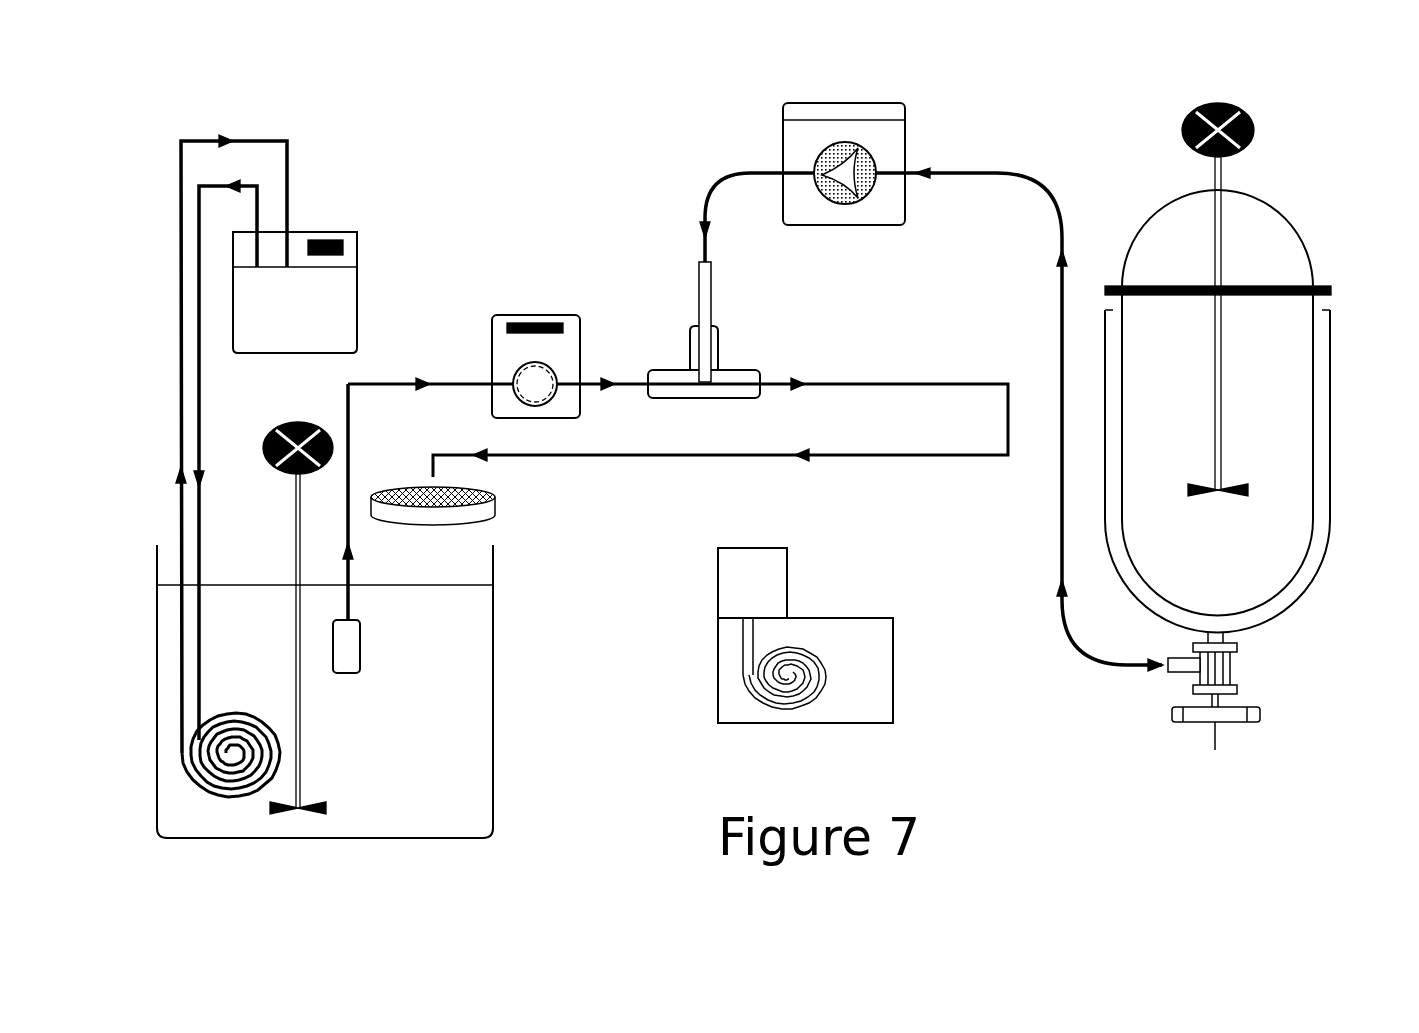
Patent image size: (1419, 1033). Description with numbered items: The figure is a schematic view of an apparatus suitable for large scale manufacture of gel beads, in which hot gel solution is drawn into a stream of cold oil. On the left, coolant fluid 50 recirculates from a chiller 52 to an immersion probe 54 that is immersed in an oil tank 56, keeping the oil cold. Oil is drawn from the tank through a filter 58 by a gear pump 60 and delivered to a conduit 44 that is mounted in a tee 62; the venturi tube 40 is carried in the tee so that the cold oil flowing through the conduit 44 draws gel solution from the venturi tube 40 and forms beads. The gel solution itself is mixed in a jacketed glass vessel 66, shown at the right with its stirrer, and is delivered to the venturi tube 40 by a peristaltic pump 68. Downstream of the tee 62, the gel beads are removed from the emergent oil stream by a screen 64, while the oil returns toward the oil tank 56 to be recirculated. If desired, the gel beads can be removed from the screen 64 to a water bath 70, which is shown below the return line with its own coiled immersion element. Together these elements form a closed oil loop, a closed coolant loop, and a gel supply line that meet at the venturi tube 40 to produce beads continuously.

The venturi tube 40 is at (705, 330).
The conduit 44 is at (460, 382).
The coolant fluid 50 is at (178, 382).
The chiller 52 is at (355, 232).
The immersion probe 54 is at (212, 778).
The oil tank 56 is at (493, 711).
The filter 58 is at (350, 645).
The gear pump 60 is at (515, 315).
The tee 62 is at (640, 298).
The screen 64 is at (495, 505).
The jacketed glass vessel 66 is at (1300, 595).
The peristaltic pump 68 is at (843, 170).
The water bath 70 is at (835, 618).